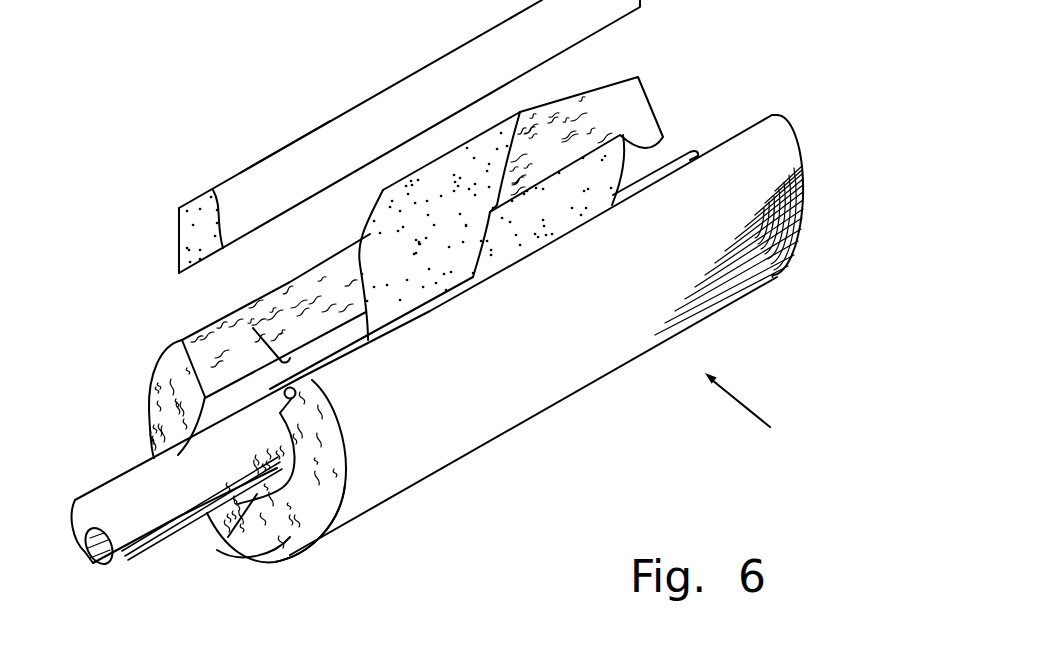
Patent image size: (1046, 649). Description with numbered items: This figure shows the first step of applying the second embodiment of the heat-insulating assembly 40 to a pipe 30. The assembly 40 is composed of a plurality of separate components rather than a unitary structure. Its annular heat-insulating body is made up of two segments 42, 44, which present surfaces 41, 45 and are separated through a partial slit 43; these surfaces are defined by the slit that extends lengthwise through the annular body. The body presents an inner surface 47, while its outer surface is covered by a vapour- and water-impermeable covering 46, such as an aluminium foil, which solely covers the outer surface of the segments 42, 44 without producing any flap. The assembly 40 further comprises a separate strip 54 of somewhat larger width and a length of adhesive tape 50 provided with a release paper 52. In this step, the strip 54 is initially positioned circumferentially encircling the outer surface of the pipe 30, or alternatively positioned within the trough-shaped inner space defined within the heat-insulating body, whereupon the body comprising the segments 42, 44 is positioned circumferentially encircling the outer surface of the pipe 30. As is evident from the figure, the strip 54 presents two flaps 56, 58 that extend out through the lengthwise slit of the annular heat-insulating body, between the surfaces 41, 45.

The pipe 30 is at (140, 522).
The heat-insulating assembly 40 is at (753, 414).
The surface 41 is at (203, 337).
The segment 42 is at (160, 390).
The partial slit 43 is at (216, 538).
The segment 44 is at (287, 530).
The surface 45 is at (313, 427).
The covering 46 is at (510, 416).
The inner surface 47 is at (253, 328).
The adhesive tape 50 is at (218, 182).
The release paper 52 is at (285, 170).
The strip 54 is at (353, 277).
The flap 56 is at (650, 160).
The flap 58 is at (512, 138).